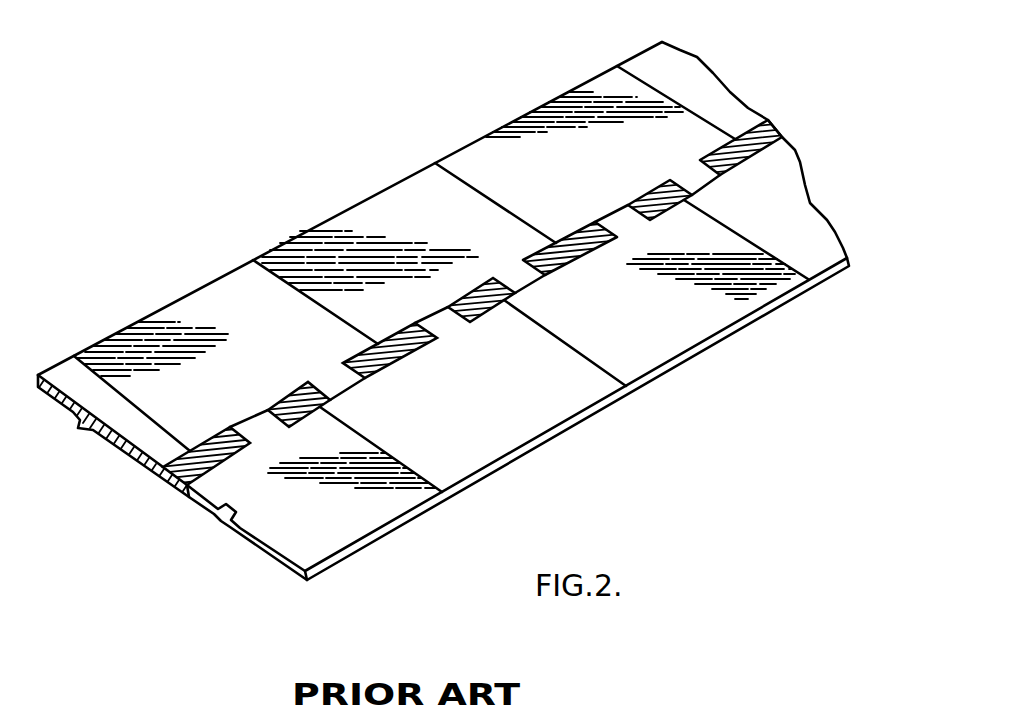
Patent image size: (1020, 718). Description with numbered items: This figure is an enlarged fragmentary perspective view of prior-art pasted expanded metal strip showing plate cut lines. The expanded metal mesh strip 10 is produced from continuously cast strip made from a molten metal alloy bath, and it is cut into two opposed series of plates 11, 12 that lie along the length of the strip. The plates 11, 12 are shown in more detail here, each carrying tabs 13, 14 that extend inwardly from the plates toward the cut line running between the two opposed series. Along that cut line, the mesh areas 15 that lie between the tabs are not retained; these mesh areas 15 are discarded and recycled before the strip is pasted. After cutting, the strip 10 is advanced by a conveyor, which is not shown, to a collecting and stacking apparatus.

The expanded metal mesh strip 10 is at (218, 280).
The plates 11 is at (428, 190).
The plates 12 is at (647, 347).
The tabs 13 is at (297, 400).
The tabs 14 is at (450, 322).
The mesh areas 15 is at (177, 470).